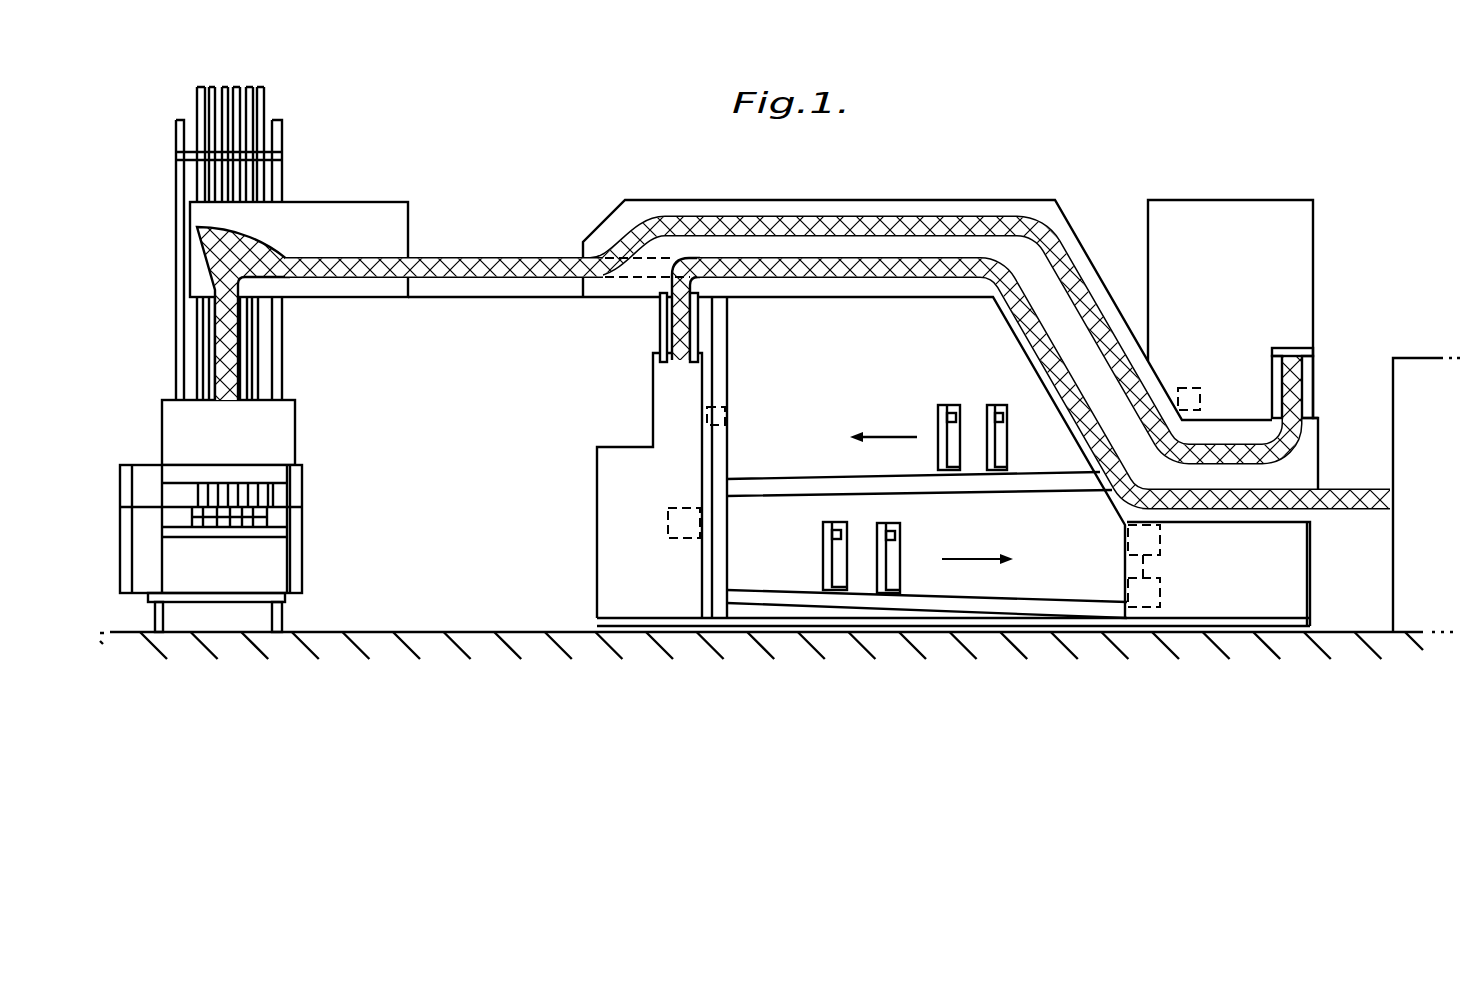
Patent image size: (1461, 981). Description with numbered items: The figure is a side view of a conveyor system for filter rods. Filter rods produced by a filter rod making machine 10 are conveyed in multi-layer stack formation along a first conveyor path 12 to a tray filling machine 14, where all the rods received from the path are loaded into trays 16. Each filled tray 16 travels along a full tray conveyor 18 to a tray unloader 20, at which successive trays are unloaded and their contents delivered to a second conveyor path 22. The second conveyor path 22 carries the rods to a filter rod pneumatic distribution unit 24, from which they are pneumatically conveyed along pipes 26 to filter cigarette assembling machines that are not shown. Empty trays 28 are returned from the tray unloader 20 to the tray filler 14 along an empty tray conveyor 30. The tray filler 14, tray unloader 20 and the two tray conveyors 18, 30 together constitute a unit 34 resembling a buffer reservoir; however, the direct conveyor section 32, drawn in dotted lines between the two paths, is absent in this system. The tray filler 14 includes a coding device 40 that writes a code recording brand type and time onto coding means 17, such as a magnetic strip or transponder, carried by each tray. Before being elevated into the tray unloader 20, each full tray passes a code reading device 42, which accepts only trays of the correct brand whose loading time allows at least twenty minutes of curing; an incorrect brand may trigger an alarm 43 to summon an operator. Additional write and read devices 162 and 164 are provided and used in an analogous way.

The filter rod making machine 10 is at (1403, 357).
The first conveyor path 12 is at (1022, 330).
The tray filling machine 14 is at (597, 532).
The tray 16 is at (823, 537).
The coding means 17 is at (950, 405).
The full tray conveyor 18 is at (1015, 602).
The tray unloader 20 is at (1246, 323).
The second conveyor path 22 is at (912, 217).
The filter rod pneumatic distribution unit 24 is at (287, 412).
The pipes 26 is at (240, 86).
The empty tray 28 is at (1008, 437).
The empty tray conveyor 30 is at (828, 476).
The conveyor section 32 is at (657, 257).
The unit 34 is at (830, 420).
The coding device 40 is at (700, 506).
The code reading device 42 is at (1161, 540).
The alarm 43 is at (1161, 593).
The write head device 162 is at (1202, 390).
The read head device 164 is at (728, 410).